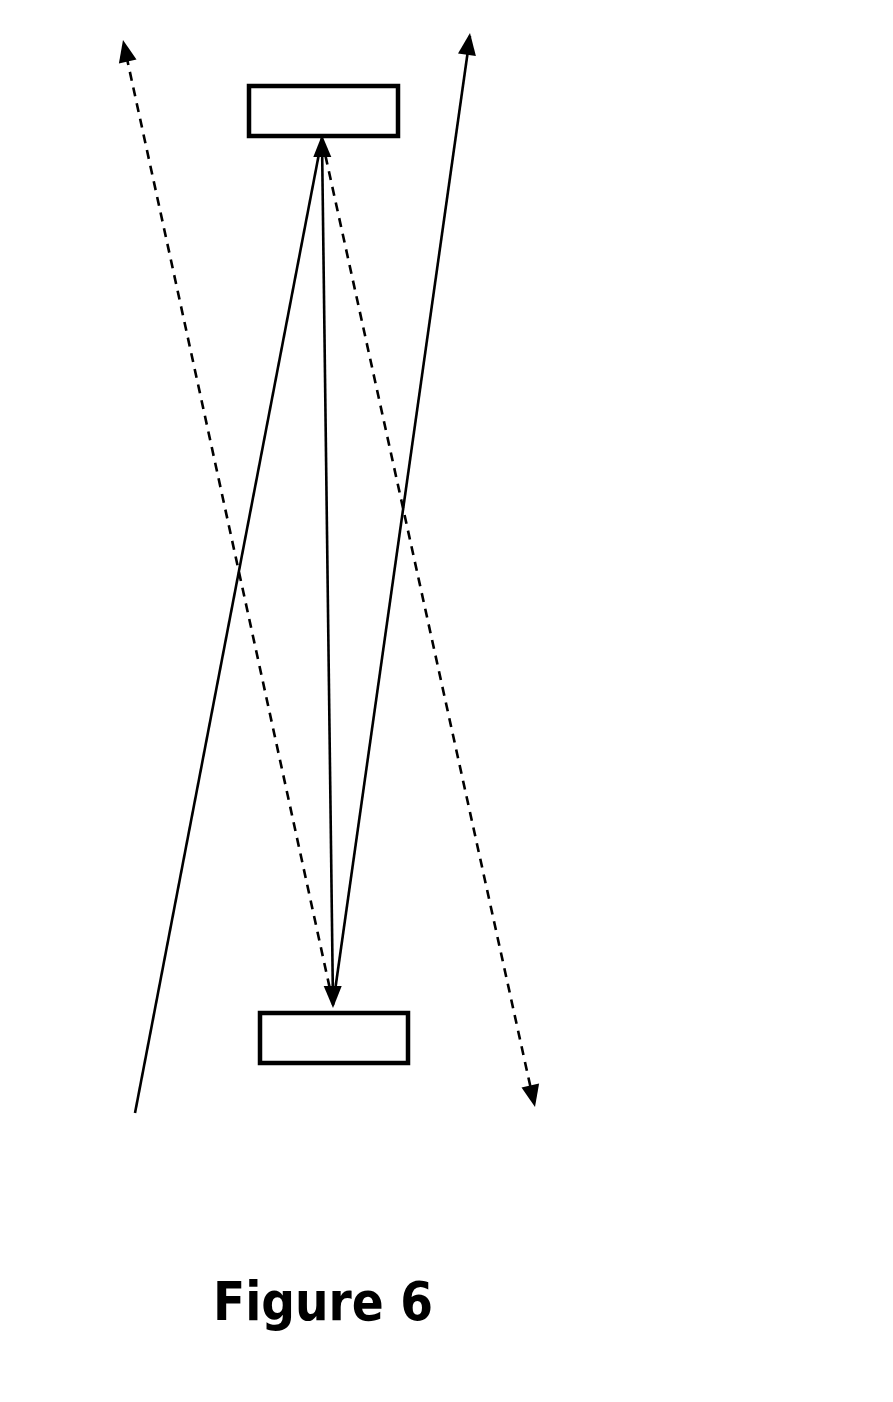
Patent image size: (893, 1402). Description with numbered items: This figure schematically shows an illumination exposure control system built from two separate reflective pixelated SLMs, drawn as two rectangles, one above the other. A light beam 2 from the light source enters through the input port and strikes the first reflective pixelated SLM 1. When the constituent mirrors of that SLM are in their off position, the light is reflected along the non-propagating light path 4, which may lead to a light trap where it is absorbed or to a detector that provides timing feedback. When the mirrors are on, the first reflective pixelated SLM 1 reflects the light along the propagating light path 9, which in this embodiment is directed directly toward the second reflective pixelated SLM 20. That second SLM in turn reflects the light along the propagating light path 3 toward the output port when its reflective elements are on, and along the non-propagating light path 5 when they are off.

The reflective pixelated SLM 1 is at (327, 84).
The second reflective pixelated SLM 20 is at (357, 1065).
The propagating light path 9 is at (330, 597).
The light beam 2 is at (190, 790).
The propagating light path 3 is at (462, 110).
The non-propagating light path 5 is at (155, 183).
The non-propagating light path 4 is at (457, 792).